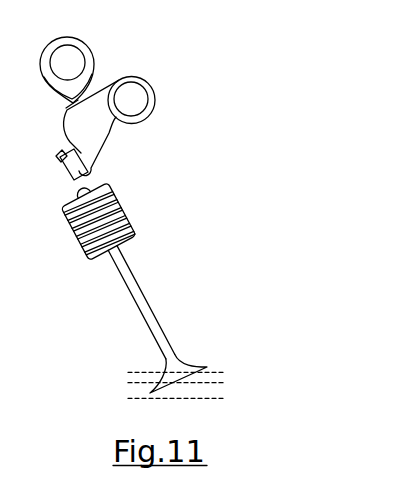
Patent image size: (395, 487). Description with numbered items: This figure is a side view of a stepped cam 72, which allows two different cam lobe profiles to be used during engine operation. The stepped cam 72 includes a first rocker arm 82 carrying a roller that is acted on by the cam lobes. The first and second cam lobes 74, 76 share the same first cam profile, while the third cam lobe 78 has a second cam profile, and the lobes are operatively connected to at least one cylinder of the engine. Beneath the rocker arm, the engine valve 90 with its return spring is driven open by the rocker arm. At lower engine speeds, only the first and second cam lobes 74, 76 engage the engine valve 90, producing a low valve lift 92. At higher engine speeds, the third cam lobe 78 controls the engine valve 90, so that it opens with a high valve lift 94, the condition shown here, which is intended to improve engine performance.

The stepped cam 72 is at (146, 59).
The first cam lobe 74 is at (68, 40).
The second cam lobe 76 is at (68, 72).
The third cam lobe 78 is at (72, 104).
The first rocker arm 82 is at (110, 130).
The engine valve 90 is at (145, 313).
The low valve lift 92 is at (218, 377).
The high valve lift 94 is at (210, 399).